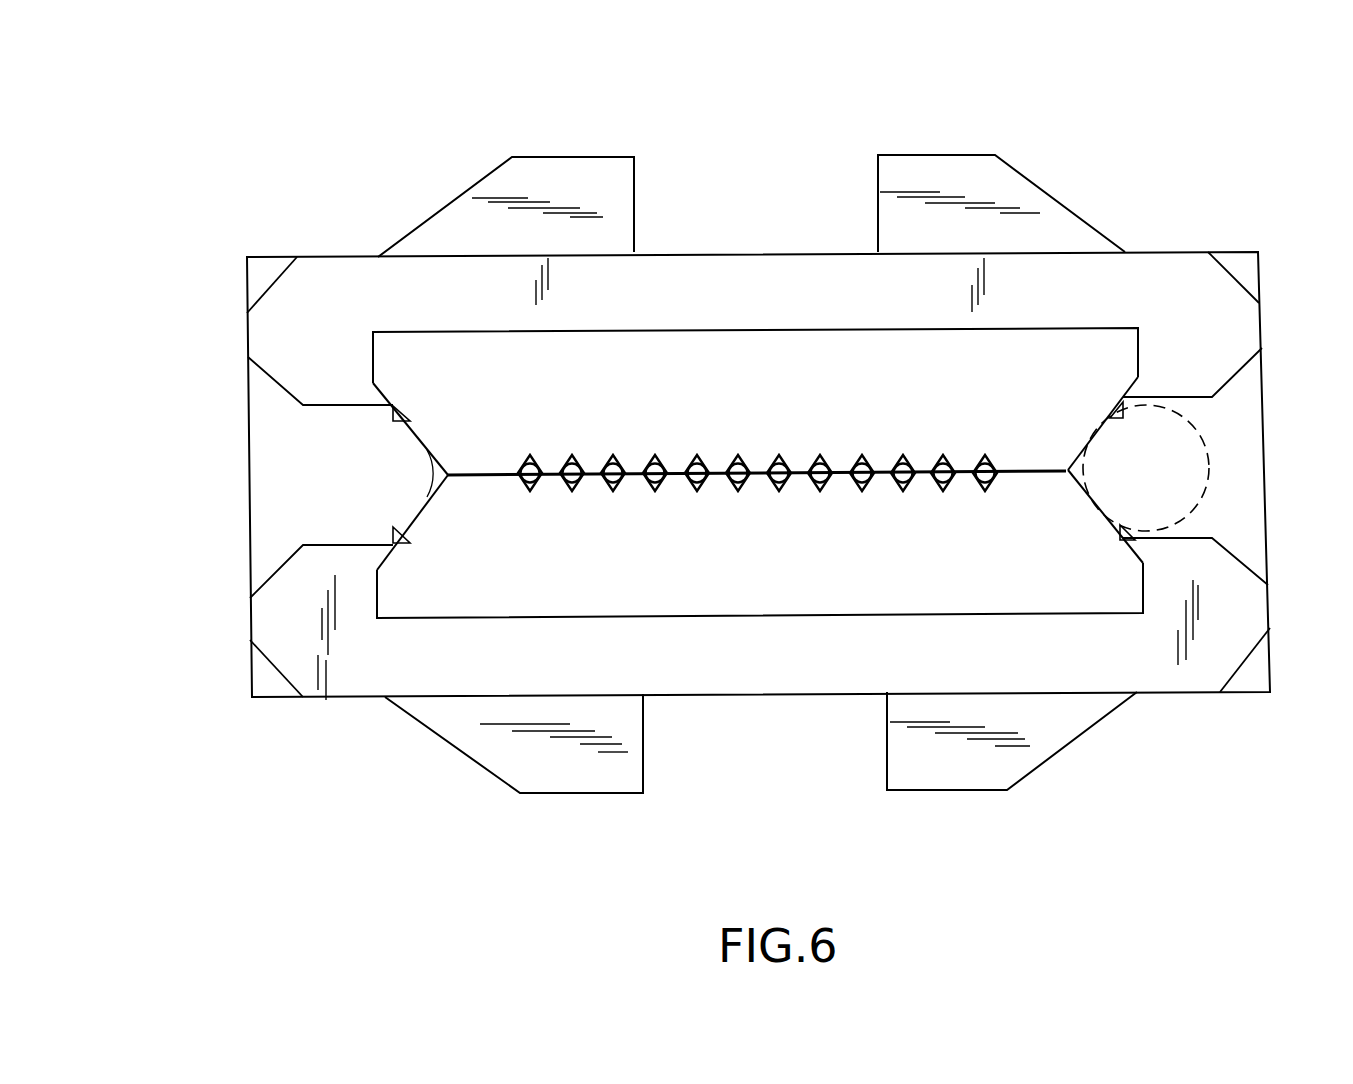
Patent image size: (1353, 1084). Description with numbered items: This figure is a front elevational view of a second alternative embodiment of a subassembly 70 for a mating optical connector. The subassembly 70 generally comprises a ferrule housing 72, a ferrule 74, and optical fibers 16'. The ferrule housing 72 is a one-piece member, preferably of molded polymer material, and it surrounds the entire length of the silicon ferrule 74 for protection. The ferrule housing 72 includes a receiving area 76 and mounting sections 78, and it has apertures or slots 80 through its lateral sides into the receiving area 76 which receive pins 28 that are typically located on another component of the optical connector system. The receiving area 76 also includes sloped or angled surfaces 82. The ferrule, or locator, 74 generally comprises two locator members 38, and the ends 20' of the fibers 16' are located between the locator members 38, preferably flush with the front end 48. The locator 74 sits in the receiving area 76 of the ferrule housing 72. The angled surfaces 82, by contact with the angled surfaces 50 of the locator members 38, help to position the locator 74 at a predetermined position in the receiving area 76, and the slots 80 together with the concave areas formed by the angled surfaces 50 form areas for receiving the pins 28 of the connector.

The subassembly 70 is at (241, 203).
The ferrule housing 72 is at (265, 333).
The ferrule 74 is at (485, 603).
The receiving area 76 is at (1060, 615).
The mounting sections 78 is at (555, 172).
The slots 80 is at (262, 428).
The angled surfaces 82 is at (378, 392).
The locator members 38 is at (822, 360).
The front end 48 is at (1100, 355).
The pins 28 is at (1202, 503).
The angled surfaces 50 is at (396, 410).
The optical fibers 16' is at (757, 471).
The ends 20' is at (636, 442).